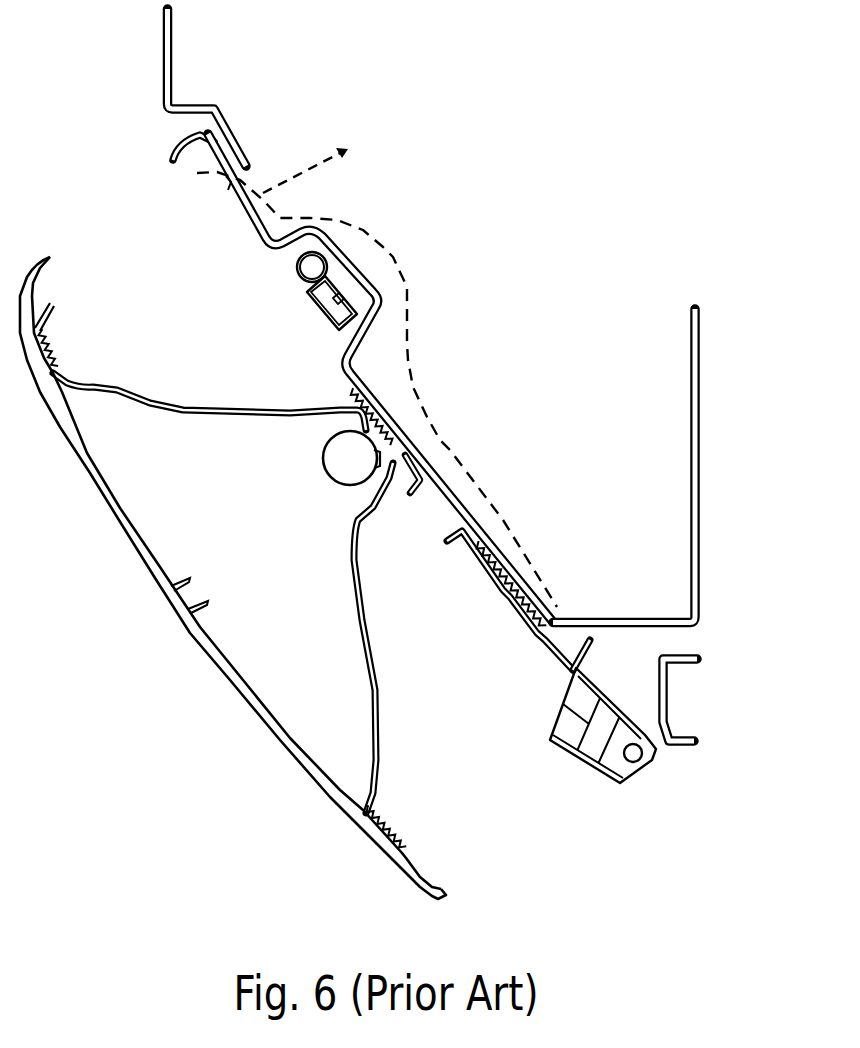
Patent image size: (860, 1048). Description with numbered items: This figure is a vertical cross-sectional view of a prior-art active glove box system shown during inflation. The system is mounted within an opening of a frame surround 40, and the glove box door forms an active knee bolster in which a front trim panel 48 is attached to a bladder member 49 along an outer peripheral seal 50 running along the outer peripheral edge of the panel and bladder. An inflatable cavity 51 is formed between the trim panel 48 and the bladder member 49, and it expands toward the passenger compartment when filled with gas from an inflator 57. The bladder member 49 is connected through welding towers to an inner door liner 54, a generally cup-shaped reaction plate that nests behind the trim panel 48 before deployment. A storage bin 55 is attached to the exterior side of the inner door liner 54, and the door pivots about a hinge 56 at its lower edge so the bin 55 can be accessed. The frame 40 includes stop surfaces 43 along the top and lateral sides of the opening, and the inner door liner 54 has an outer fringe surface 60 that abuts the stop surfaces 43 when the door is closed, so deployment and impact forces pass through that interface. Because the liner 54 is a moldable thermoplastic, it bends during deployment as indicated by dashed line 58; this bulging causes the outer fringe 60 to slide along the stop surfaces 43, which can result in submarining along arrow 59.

The frame surround 40 is at (157, 40).
The stop surfaces 43 is at (222, 132).
The front trim panel 48 is at (103, 500).
The bladder member 49 is at (176, 402).
The outer peripheral seal 50 is at (48, 354).
The inflatable cavity 51 is at (257, 627).
The inner door liner 54 is at (520, 618).
The storage bin 55 is at (684, 355).
The hinge 56 is at (607, 777).
The inflator 57 is at (307, 298).
The dashed line 58 is at (393, 247).
The arrow 59 is at (297, 165).
The outer fringe surface 60 is at (224, 147).